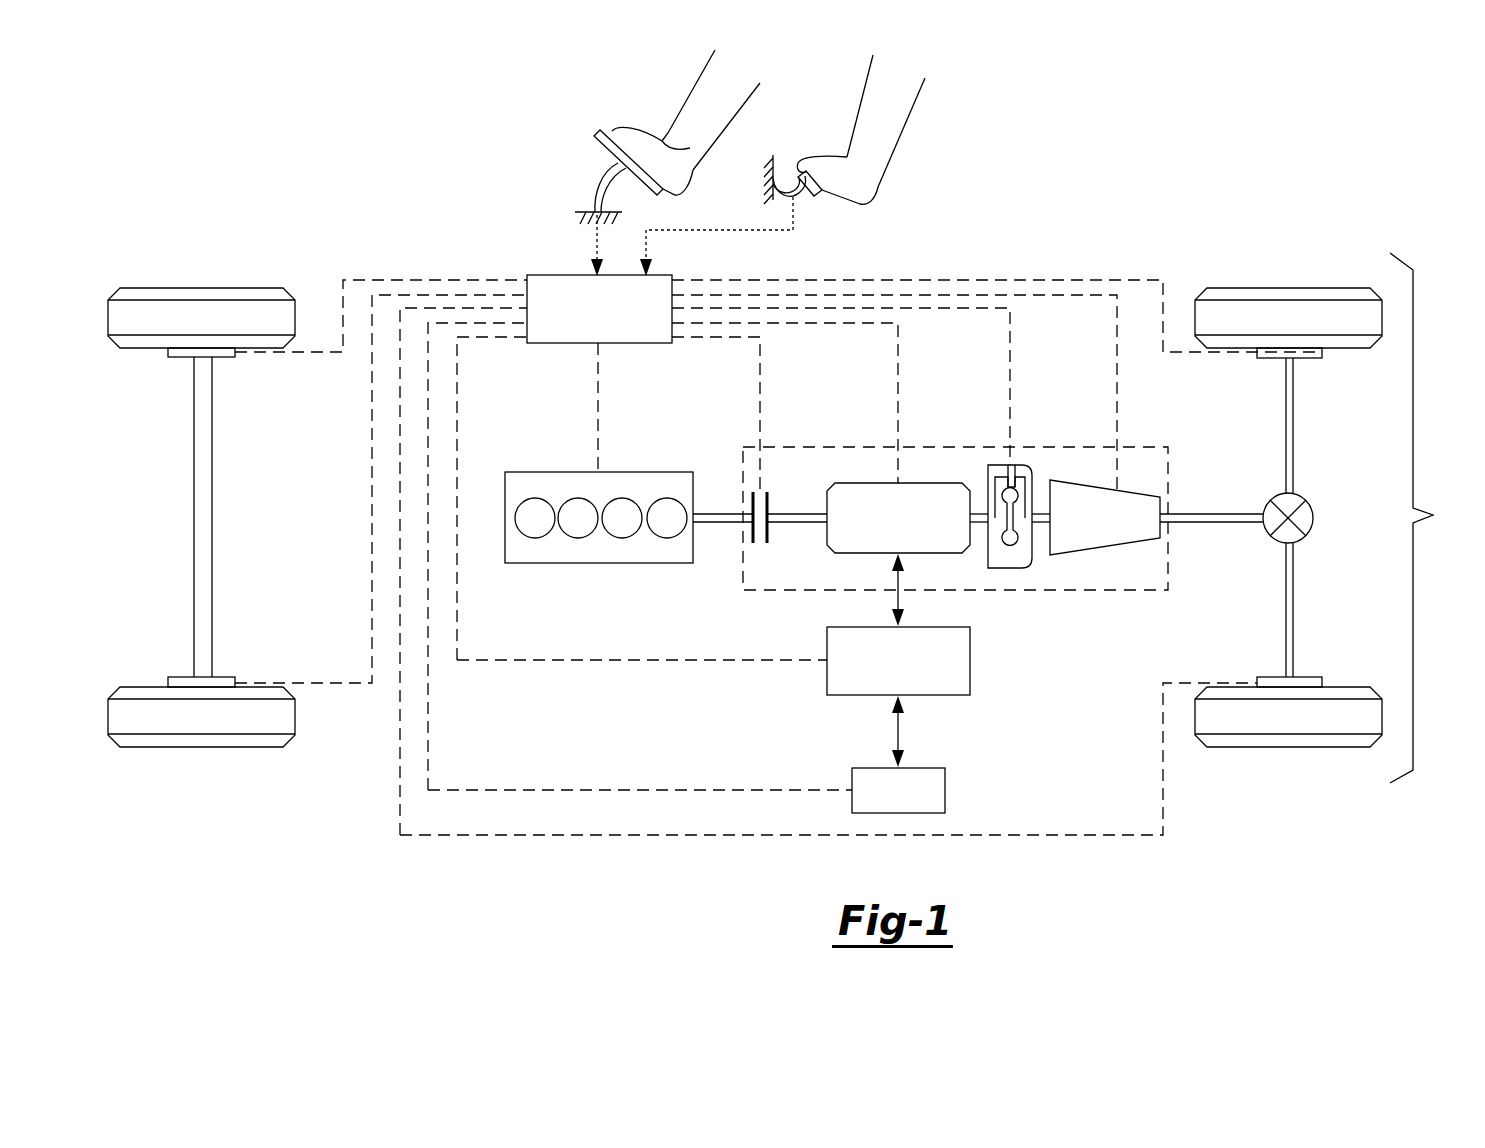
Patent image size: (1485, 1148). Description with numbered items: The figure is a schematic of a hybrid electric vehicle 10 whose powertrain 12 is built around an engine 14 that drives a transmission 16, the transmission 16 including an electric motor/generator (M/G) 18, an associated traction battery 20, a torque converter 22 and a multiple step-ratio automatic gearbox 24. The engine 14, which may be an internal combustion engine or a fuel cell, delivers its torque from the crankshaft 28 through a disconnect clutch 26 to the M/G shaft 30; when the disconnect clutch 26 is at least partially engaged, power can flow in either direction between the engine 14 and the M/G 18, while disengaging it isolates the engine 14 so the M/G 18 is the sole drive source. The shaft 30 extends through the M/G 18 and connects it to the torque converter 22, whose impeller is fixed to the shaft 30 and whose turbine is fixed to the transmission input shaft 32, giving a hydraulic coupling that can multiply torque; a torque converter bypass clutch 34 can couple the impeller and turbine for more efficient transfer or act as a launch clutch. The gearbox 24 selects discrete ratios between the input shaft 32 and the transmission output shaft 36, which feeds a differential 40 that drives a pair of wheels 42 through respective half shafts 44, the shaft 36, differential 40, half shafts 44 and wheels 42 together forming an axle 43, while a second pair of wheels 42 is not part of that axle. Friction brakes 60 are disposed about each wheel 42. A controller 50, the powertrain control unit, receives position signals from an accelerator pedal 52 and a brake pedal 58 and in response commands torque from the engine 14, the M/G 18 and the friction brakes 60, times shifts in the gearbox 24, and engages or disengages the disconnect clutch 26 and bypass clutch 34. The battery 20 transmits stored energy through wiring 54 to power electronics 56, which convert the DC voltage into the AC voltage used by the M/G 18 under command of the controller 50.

The hybrid electric vehicle 10 is at (1180, 210).
The powertrain 12 is at (684, 710).
The engine 14 is at (525, 472).
The transmission 16 is at (940, 437).
The electric motor/generator (M/G) 18 is at (875, 483).
The traction battery 20 is at (945, 793).
The torque converter 22 is at (1028, 529).
The gearbox 24 is at (1098, 555).
The disconnect clutch 26 is at (770, 540).
The crankshaft 28 is at (725, 514).
The M/G shaft 30 is at (800, 514).
The transmission input shaft 32 is at (1035, 512).
The torque converter bypass clutch 34 is at (1011, 466).
The transmission output shaft 36 is at (1225, 513).
The differential 40 is at (1313, 518).
The wheels 42 is at (205, 288).
The axle 43 is at (1428, 518).
The half shafts 44 is at (1293, 420).
The controller 50 is at (540, 275).
The accelerator pedal 52 is at (595, 148).
The wiring 54 is at (903, 735).
The power electronics 56 is at (970, 662).
The brake pedal 58 is at (826, 197).
The friction brakes 60 is at (178, 357).